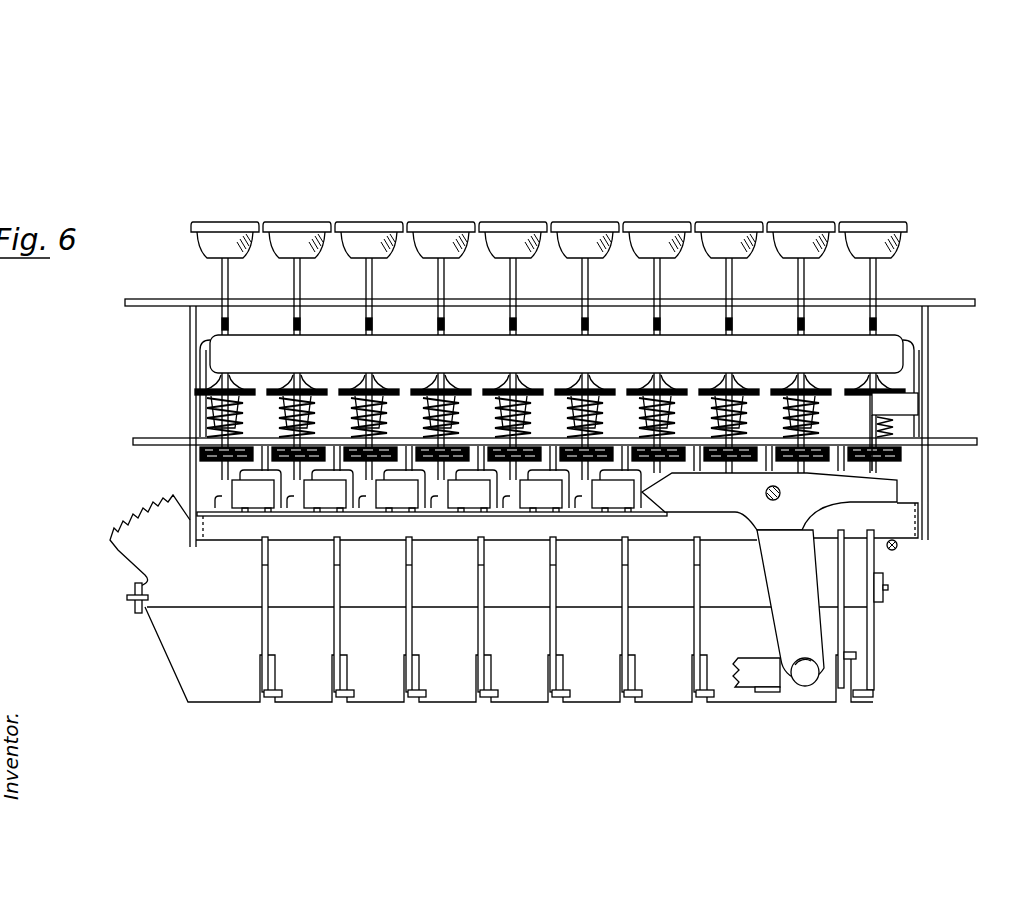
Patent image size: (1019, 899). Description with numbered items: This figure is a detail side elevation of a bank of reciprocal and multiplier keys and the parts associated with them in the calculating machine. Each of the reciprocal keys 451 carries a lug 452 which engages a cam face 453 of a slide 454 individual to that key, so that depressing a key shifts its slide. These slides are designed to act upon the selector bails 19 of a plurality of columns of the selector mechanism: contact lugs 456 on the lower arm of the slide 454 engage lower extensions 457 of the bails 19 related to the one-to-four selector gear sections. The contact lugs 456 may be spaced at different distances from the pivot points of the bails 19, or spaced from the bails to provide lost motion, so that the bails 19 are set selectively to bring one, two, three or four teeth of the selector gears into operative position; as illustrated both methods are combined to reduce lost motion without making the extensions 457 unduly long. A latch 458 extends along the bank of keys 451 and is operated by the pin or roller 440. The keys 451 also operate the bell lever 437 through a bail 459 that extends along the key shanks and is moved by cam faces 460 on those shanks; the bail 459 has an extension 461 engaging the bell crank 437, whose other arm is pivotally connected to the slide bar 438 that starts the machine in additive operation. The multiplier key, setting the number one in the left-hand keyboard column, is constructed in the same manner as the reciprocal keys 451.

The selector bails 19 is at (150, 615).
The bell lever 437 is at (812, 627).
The slide bar 438 is at (760, 678).
The roller 440 is at (897, 548).
The reciprocal keys 451 is at (647, 221).
The lugs 452 is at (237, 492).
The cam faces 453 is at (261, 514).
The slide 454 is at (338, 593).
The contact lugs 456 is at (871, 692).
The lower extensions 457 is at (172, 657).
The latch 458 is at (915, 503).
The bail 459 is at (203, 342).
The cam faces 460 is at (355, 336).
The extension 461 is at (915, 399).